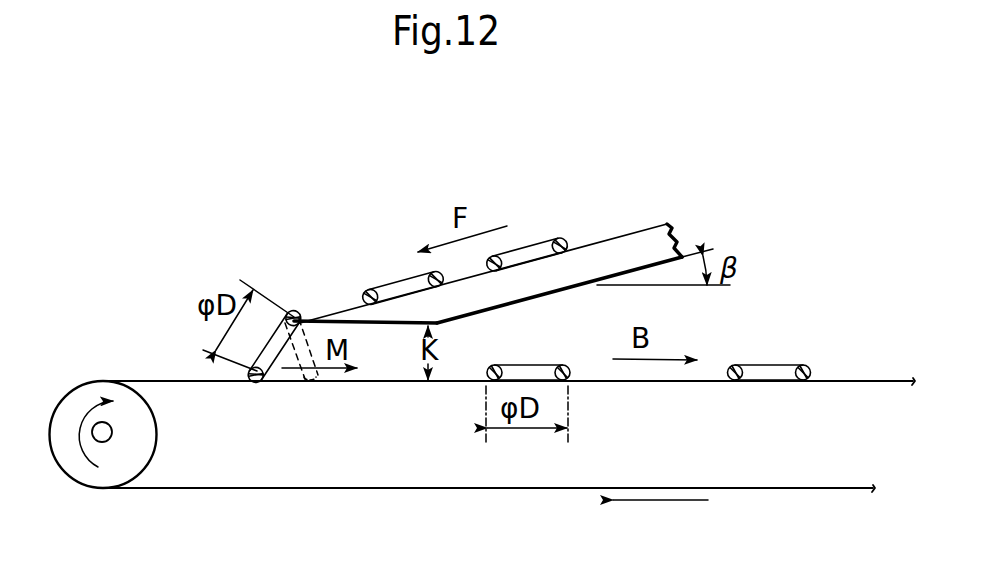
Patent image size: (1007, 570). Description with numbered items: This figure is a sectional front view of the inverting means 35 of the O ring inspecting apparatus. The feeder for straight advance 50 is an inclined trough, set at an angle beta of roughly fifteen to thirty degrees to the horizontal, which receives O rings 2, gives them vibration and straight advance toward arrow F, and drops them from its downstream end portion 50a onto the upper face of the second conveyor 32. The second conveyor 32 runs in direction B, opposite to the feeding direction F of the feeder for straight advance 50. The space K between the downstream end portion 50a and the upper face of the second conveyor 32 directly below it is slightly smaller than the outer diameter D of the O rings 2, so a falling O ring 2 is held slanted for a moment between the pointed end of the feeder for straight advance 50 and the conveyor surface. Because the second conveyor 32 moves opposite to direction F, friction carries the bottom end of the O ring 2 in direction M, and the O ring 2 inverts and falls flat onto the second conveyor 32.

The O ring 2 is at (238, 344).
The second conveyor 32 is at (172, 377).
The inverting means 35 is at (295, 253).
The feeder for straight advance 50 is at (603, 230).
The downstream end portion 50a is at (407, 320).